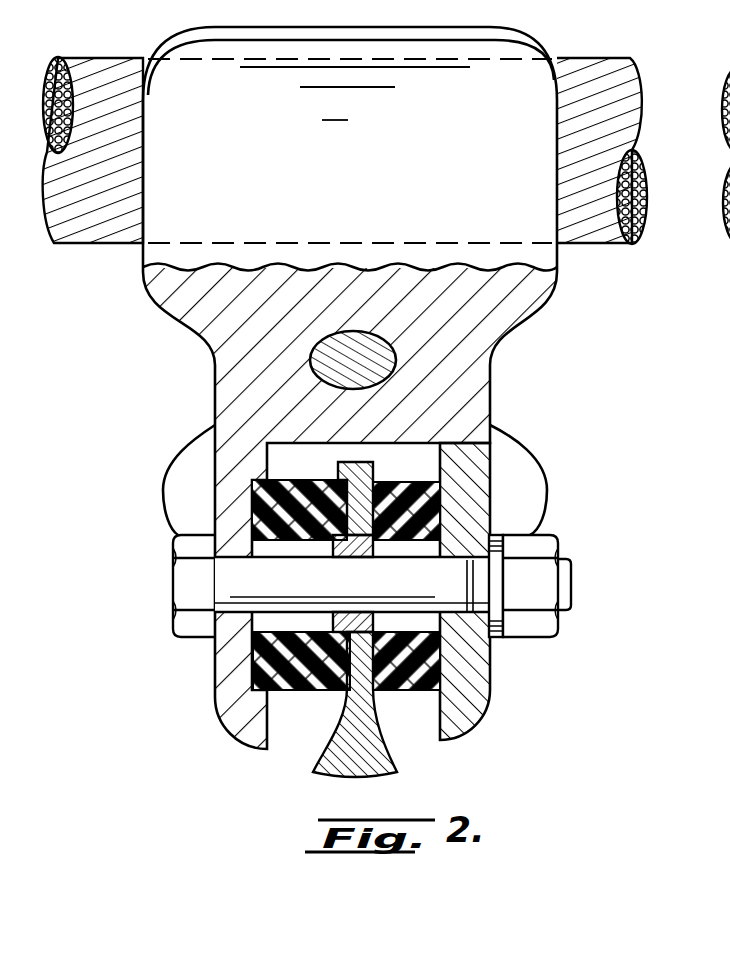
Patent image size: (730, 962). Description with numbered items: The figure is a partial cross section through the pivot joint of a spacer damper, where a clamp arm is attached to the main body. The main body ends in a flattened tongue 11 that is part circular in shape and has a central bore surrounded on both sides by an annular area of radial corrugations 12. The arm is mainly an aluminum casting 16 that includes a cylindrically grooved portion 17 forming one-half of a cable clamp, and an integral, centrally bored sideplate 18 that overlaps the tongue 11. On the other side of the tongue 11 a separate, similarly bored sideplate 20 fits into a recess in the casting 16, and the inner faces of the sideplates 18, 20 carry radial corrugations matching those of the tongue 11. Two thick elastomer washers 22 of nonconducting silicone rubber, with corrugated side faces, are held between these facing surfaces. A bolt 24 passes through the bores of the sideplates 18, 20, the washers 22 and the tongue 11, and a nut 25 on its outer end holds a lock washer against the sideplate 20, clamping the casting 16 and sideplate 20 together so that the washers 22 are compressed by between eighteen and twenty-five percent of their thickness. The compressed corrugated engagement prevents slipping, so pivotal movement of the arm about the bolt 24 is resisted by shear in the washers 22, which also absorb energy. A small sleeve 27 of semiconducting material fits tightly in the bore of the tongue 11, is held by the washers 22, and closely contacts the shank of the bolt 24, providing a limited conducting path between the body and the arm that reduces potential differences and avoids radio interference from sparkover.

The flattened tongue 11 is at (352, 718).
The radial corrugations 12 is at (342, 693).
The casting 16 is at (198, 372).
The cylindrically grooved portion 17 is at (514, 313).
The sideplate 18 is at (217, 463).
The sideplate 20 is at (476, 661).
The elastomer washers 22 is at (276, 505).
The bolt 24 is at (186, 582).
The nut 25 is at (537, 580).
The sleeve of semiconducting material 27 is at (402, 689).